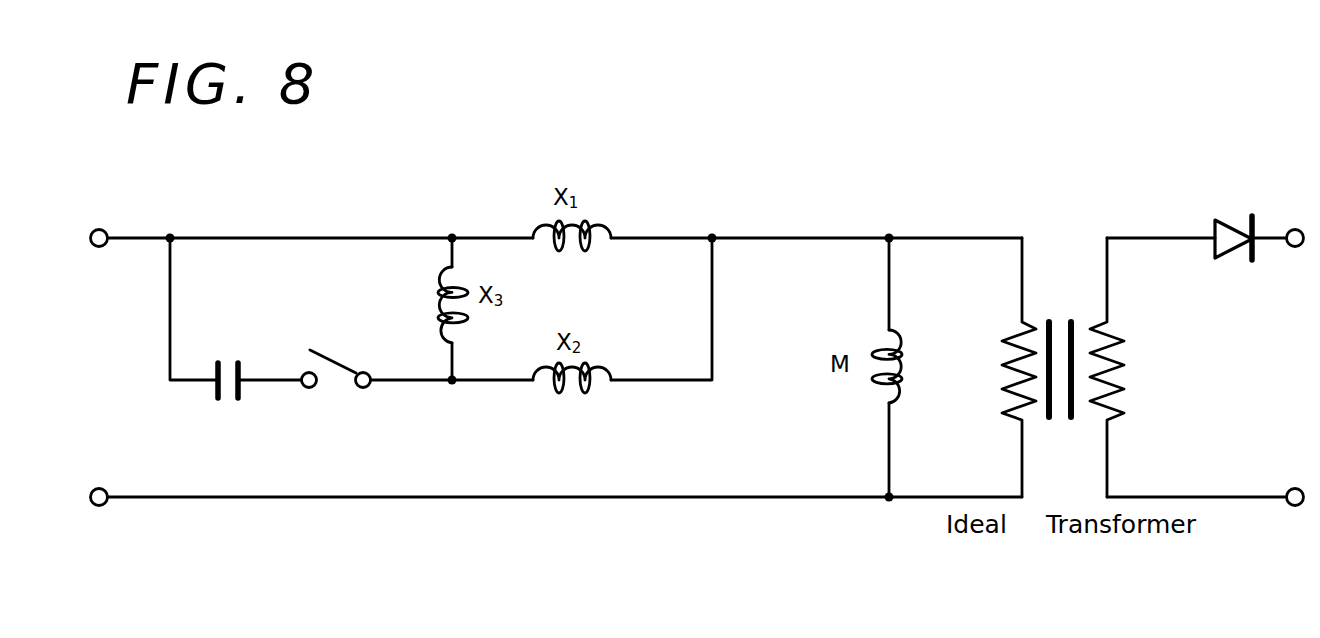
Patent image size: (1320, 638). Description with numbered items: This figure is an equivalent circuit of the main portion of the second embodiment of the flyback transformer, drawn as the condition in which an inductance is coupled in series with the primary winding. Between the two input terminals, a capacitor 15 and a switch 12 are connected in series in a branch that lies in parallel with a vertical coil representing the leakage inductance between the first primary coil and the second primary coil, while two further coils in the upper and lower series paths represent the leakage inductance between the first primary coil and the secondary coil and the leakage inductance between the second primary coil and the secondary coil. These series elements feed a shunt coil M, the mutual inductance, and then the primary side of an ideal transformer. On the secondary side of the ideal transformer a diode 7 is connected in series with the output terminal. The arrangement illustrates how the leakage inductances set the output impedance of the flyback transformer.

The diode 7 is at (1233, 215).
The switch 12 is at (333, 392).
The capacitor 15 is at (228, 401).